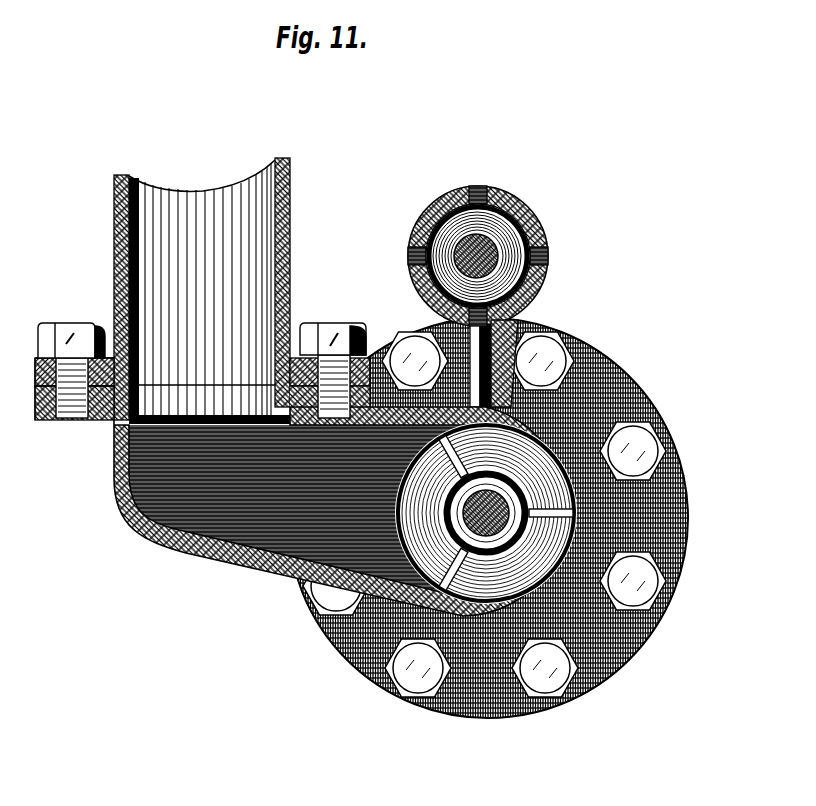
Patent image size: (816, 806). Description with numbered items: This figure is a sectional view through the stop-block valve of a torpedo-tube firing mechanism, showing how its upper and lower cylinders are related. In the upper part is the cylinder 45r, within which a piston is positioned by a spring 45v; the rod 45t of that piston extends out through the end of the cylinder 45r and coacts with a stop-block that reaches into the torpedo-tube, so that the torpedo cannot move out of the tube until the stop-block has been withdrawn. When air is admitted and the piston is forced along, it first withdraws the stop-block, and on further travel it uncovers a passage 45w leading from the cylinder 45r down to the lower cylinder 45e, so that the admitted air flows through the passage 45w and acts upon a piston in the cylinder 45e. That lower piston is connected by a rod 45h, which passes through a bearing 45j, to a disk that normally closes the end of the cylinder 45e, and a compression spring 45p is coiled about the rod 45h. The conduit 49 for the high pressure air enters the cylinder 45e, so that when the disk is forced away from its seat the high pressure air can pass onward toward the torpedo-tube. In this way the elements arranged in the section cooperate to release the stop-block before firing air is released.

The conduit 49 is at (240, 250).
The cylinder 45e is at (246, 562).
The rod 45h is at (483, 497).
The bearing 45j is at (446, 538).
The compression spring 45p is at (545, 514).
The cylinder 45r is at (516, 212).
The rod 45t is at (462, 240).
The spring 45v is at (518, 251).
The passage 45w is at (512, 275).